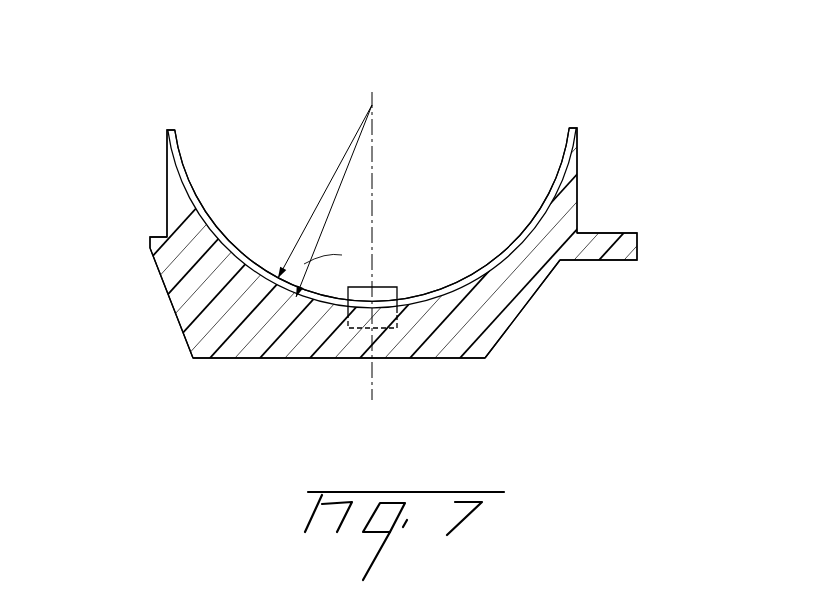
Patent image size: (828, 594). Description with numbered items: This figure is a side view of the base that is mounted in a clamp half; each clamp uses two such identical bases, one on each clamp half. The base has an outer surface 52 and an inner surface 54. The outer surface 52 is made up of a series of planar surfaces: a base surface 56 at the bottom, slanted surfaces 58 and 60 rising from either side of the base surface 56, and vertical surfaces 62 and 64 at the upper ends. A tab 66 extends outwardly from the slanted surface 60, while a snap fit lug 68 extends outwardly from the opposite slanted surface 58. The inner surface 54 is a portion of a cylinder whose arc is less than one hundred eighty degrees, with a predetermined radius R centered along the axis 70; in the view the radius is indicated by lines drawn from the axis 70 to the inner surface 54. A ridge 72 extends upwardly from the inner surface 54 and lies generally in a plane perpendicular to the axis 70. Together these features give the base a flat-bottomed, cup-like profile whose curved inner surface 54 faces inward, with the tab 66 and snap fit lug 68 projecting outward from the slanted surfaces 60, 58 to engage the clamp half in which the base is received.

The outer surface 52 is at (303, 364).
The inner surface 54 is at (240, 232).
The base surface 56 is at (452, 360).
The slanted surface 58 is at (175, 315).
The slanted surface 60 is at (525, 307).
The vertical surface 62 is at (167, 167).
The vertical surface 64 is at (579, 157).
The tab 66 is at (607, 250).
The snap fit lug 68 is at (150, 249).
The axis 70 is at (376, 100).
The ridge 72 is at (434, 300).